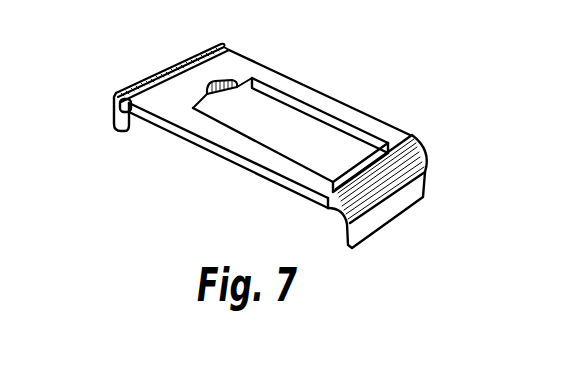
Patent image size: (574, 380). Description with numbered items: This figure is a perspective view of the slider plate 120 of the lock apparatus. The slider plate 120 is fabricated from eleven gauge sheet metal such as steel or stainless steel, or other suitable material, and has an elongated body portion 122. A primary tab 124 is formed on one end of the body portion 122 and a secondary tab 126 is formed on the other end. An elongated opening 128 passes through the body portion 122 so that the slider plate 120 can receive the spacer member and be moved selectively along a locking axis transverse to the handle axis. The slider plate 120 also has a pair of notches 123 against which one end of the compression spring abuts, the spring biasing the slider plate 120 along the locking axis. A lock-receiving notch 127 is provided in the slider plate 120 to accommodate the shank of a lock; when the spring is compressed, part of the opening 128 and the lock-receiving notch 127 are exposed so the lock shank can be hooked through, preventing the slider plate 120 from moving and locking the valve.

The slider plate 120 is at (250, 49).
The elongated body portion 122 is at (243, 153).
The notches 123 is at (228, 50).
The primary tab 124 is at (133, 128).
The secondary tab 126 is at (387, 207).
The lock-receiving notch 127 is at (218, 94).
The elongated opening 128 is at (309, 102).